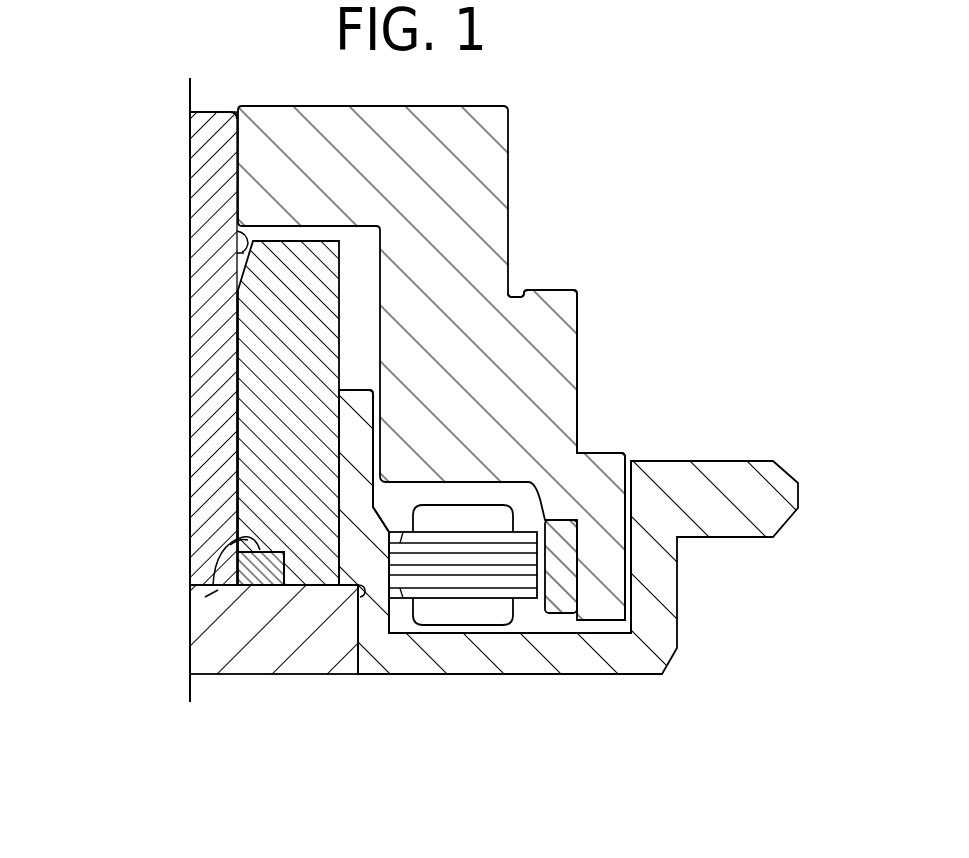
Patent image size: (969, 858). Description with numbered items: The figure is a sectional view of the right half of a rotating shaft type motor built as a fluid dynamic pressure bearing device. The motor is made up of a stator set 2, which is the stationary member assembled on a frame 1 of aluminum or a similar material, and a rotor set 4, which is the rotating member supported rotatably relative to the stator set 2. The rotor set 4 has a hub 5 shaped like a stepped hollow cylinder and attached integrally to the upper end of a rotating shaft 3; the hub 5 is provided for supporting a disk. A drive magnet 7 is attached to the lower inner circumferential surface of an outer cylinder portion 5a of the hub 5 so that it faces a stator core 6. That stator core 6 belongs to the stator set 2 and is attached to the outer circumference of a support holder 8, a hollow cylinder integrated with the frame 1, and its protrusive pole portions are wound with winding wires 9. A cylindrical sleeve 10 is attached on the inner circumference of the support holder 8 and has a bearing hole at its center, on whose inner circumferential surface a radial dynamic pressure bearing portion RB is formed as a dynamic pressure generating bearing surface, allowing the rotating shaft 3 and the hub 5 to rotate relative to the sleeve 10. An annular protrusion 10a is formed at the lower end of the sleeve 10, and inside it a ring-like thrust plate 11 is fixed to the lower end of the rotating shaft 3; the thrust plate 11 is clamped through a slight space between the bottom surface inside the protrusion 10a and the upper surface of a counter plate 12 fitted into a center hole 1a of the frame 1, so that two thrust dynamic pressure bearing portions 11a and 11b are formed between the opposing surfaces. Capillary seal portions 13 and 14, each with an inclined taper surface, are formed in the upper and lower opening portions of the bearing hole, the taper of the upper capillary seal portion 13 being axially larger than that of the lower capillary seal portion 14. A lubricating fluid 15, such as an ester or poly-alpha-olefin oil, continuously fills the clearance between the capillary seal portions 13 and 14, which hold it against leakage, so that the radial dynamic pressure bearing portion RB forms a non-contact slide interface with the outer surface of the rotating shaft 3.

The frame 1 is at (498, 657).
The center hole 1a is at (365, 592).
The stator set 2 is at (550, 624).
The rotating shaft 3 is at (205, 413).
The rotor set 4 is at (545, 225).
The hub 5 is at (541, 372).
The outer cylinder portion 5a is at (608, 460).
The stator core 6 is at (520, 583).
The drive magnet 7 is at (570, 580).
The support holder 8 is at (355, 495).
The winding wires 9 is at (481, 621).
The sleeve 10 is at (270, 325).
The annular protrusion 10a is at (323, 563).
The thrust plate 11 is at (237, 573).
The thrust dynamic pressure bearing portion 11a is at (243, 537).
The thrust dynamic pressure bearing portion 11b is at (227, 630).
The counter plate 12 is at (252, 657).
The capillary seal portion 13 is at (240, 235).
The capillary seal portion 14 is at (250, 572).
The lubricating fluid 15 is at (240, 262).
The radial dynamic pressure bearing portion RB is at (238, 442).